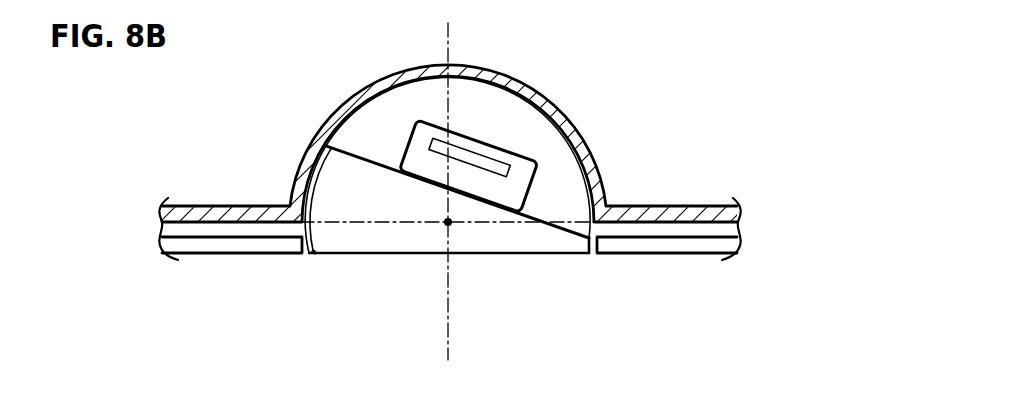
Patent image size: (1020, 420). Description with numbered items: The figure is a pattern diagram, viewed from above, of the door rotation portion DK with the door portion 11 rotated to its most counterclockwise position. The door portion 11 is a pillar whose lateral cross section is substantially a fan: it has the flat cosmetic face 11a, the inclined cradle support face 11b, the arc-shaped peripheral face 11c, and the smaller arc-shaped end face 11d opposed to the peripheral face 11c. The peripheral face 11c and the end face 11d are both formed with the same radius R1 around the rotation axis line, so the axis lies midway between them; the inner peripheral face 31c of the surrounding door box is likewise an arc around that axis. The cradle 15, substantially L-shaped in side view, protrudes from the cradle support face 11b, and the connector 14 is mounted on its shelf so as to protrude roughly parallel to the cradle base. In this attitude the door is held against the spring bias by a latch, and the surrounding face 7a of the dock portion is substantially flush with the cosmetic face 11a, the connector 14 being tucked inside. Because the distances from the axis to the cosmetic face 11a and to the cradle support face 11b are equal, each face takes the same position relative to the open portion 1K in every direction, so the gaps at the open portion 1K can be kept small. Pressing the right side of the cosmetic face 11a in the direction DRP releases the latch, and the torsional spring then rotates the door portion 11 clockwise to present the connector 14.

The door rotation portion DK is at (285, 72).
The inner peripheral face 31c is at (455, 133).
The peripheral face 11c is at (306, 148).
The surrounding face 7a is at (206, 255).
The door portion 11 is at (484, 225).
The cradle support face 11b is at (562, 221).
The cosmetic face 11a is at (527, 257).
The end face 11d is at (597, 241).
The open portion 1K is at (311, 254).
The cradle 15 is at (521, 154).
The connector 14 is at (475, 150).
The radius R1 is at (317, 175).
The pressing direction DRP is at (592, 257).